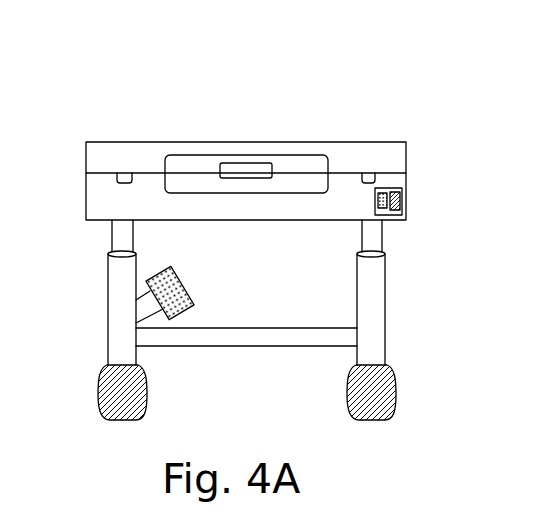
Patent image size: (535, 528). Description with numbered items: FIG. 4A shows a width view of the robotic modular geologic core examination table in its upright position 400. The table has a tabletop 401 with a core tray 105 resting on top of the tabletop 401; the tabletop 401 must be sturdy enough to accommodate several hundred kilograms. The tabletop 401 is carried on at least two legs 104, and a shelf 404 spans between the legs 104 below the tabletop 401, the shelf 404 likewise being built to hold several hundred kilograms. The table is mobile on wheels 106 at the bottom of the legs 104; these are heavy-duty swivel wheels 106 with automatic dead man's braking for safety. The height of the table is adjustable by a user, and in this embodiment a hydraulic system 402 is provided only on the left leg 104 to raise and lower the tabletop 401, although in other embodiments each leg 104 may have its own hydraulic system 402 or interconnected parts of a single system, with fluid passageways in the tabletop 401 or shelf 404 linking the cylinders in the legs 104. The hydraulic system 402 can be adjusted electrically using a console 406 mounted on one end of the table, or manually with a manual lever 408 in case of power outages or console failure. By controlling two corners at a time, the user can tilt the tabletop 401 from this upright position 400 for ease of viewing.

The upright position 400 is at (328, 110).
The core tray 105 is at (246, 167).
The tabletop 401 is at (246, 196).
The hydraulic system 402 is at (247, 237).
The leg 104 is at (106, 323).
The shelf 404 is at (246, 355).
The console 406 is at (404, 203).
The manual lever 408 is at (188, 294).
The wheel 106 is at (247, 392).